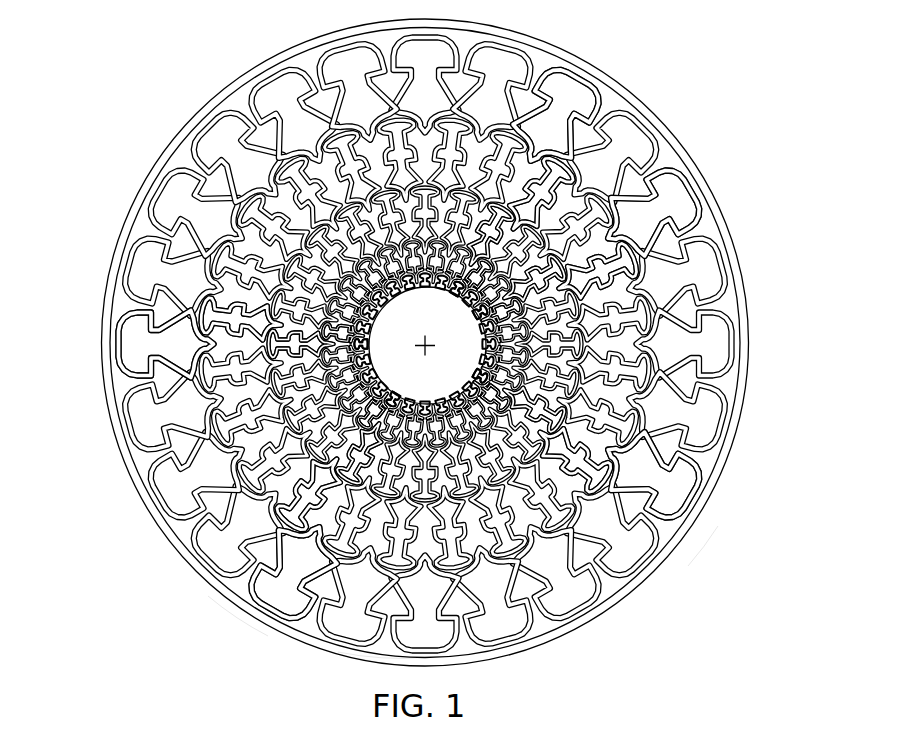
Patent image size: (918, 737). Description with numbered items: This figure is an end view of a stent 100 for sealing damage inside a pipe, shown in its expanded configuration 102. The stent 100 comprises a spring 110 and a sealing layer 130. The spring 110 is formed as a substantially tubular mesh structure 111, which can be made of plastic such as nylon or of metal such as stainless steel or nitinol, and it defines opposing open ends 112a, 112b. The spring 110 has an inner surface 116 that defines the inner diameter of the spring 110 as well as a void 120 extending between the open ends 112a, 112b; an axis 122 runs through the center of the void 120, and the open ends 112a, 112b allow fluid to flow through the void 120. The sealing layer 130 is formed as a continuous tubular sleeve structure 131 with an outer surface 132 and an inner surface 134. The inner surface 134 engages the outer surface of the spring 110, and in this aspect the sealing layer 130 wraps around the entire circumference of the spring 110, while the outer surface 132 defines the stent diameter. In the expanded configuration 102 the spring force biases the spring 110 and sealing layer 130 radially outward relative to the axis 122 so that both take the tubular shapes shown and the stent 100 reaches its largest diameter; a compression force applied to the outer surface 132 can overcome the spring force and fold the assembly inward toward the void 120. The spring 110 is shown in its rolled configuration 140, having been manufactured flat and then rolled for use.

The stent 100 is at (681, 76).
The expanded configuration 102 is at (144, 121).
The spring 110 is at (705, 376).
The tubular mesh structure 111 is at (694, 432).
The open end 112a is at (118, 339).
The open end 112b is at (361, 328).
The inner surface 116 is at (213, 466).
The void 120 is at (441, 308).
The axis 122 is at (421, 340).
The sealing layer 130 is at (596, 602).
The tubular sleeve structure 131 is at (417, 652).
The outer surface 132 is at (219, 596).
The inner surface 134 is at (680, 223).
The rolled configuration 140 is at (692, 564).